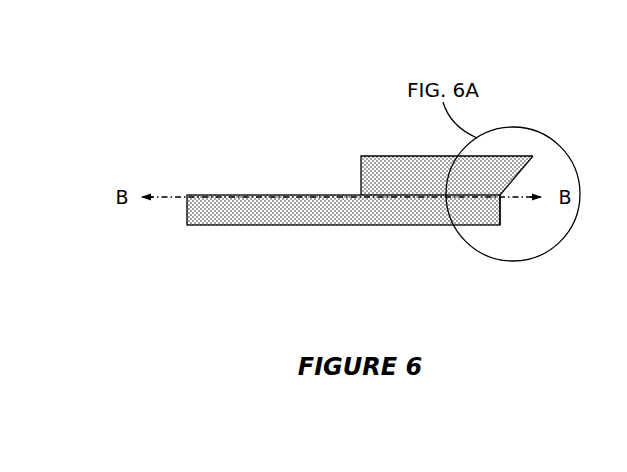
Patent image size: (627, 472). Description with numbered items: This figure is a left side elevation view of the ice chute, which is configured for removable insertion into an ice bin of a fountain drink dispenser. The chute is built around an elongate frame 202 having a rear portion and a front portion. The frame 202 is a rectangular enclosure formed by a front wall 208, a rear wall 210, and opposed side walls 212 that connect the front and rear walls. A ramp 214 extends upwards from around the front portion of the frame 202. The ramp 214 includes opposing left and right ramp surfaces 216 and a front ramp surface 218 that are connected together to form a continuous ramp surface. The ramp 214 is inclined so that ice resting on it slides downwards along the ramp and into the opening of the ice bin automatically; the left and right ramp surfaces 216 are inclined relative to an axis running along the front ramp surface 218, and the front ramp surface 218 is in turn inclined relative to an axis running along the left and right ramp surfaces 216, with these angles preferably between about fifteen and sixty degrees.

The elongate frame 202 is at (269, 89).
The front wall 208 is at (504, 210).
The rear wall 210 is at (186, 207).
The side walls 212 is at (248, 212).
The ramp 214 is at (419, 153).
The left and right ramp surfaces 216 is at (383, 178).
The front ramp surface 218 is at (528, 170).